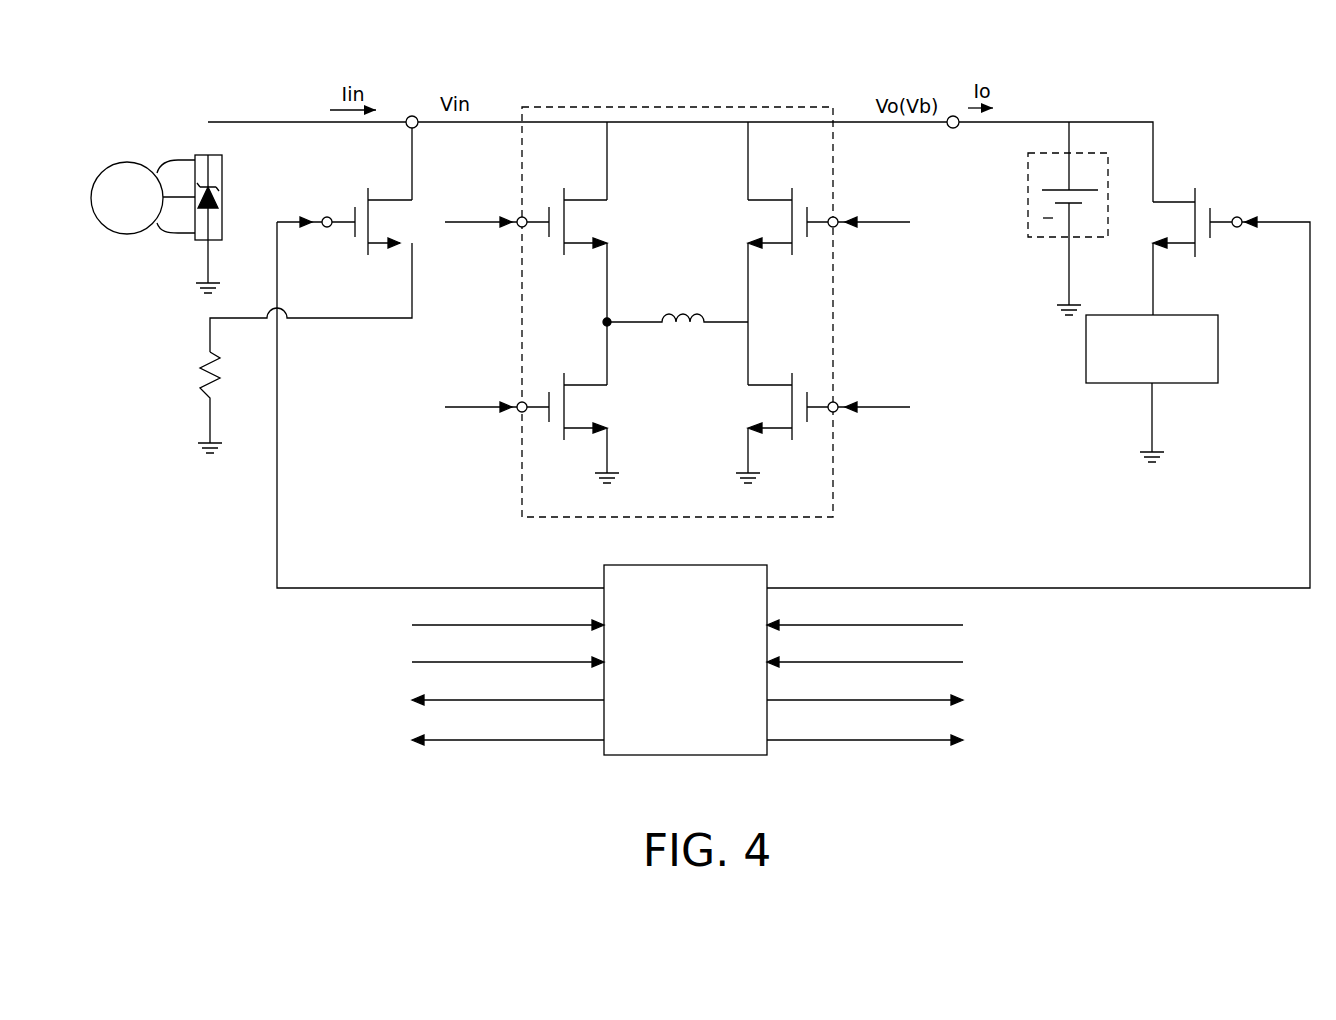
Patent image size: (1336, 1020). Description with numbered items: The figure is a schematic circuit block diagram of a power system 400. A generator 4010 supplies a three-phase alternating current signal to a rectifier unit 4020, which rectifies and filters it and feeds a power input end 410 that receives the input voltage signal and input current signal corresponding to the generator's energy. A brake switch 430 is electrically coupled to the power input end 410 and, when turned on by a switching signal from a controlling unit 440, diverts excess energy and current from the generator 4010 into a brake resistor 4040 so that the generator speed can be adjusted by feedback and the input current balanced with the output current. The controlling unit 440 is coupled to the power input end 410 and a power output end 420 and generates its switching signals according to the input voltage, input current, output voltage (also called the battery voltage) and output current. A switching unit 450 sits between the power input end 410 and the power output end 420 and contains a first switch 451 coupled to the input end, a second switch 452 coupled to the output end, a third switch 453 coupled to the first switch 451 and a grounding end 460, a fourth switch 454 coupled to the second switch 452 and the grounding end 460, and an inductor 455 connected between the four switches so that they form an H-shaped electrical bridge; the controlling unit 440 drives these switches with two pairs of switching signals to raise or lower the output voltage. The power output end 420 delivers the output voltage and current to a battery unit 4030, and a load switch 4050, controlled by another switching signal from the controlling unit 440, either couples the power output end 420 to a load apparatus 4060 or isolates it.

The power system 400 is at (632, 43).
The power input end 410 is at (409, 115).
The power output end 420 is at (953, 116).
The brake switch 430 is at (389, 200).
The controlling unit 440 is at (733, 757).
The switching unit 450 is at (790, 105).
The first switch 451 is at (587, 200).
The second switch 452 is at (770, 200).
The third switch 453 is at (583, 385).
The fourth switch 454 is at (770, 385).
The inductor 455 is at (687, 310).
The grounding end 460 is at (200, 291).
The generator 4010 is at (115, 160).
The rectifier unit 4020 is at (200, 155).
The battery unit 4030 is at (1045, 238).
The brake resistor 4040 is at (198, 372).
The load switch 4050 is at (1172, 196).
The load apparatus 4060 is at (1188, 315).